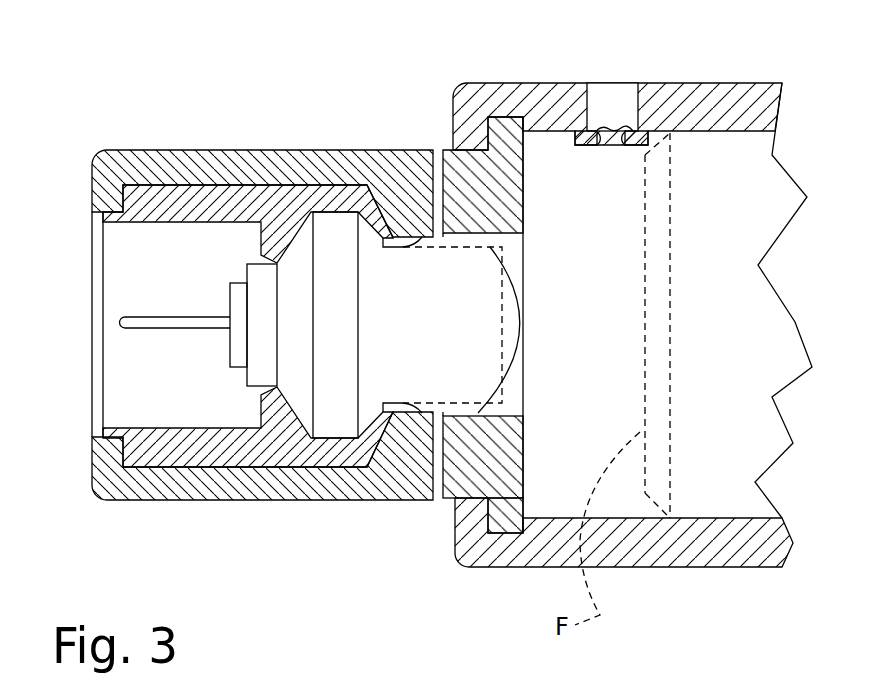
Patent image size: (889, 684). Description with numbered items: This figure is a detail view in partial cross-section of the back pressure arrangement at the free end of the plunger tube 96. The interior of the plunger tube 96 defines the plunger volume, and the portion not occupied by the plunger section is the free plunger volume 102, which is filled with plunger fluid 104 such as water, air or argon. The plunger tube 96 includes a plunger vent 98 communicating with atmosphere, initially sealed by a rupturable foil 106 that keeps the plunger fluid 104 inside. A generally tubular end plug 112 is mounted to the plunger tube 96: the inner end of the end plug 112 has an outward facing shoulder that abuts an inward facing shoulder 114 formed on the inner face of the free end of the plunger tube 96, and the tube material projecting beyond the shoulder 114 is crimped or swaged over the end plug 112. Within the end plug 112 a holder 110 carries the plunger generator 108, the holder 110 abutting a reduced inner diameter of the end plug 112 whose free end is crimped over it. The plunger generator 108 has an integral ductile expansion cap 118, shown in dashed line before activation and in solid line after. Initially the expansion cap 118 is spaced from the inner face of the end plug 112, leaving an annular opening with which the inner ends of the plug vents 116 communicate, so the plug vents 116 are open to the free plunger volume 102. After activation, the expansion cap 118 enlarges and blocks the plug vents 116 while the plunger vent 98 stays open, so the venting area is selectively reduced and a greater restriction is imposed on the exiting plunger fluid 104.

The plunger tube 96 is at (665, 567).
The plunger vent 98 is at (637, 105).
The free plunger volume 102 is at (603, 300).
The plunger fluid 104 is at (727, 405).
The foil 106 is at (625, 137).
The plunger generator 108 is at (340, 292).
The holder 110 is at (187, 185).
The end plug 112 is at (131, 150).
The shoulder 114 is at (523, 525).
The plug vent 116 is at (437, 447).
The expansion cap 118 is at (503, 345).